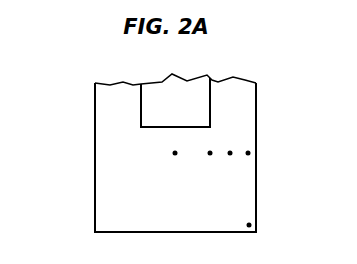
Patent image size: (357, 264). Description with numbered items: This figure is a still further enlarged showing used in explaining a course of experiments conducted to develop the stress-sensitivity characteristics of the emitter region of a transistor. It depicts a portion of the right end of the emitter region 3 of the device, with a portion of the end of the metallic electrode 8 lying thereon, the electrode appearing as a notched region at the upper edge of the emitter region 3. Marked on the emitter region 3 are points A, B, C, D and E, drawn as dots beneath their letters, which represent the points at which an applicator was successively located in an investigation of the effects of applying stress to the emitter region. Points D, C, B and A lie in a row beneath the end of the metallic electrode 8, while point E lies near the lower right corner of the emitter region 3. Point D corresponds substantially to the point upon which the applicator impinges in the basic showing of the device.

The emitter region 3 is at (99, 163).
The metallic electrode 8 is at (165, 80).
The point A is at (246, 144).
The point B is at (230, 144).
The point C is at (208, 144).
The point D is at (174, 144).
The point E is at (248, 217).